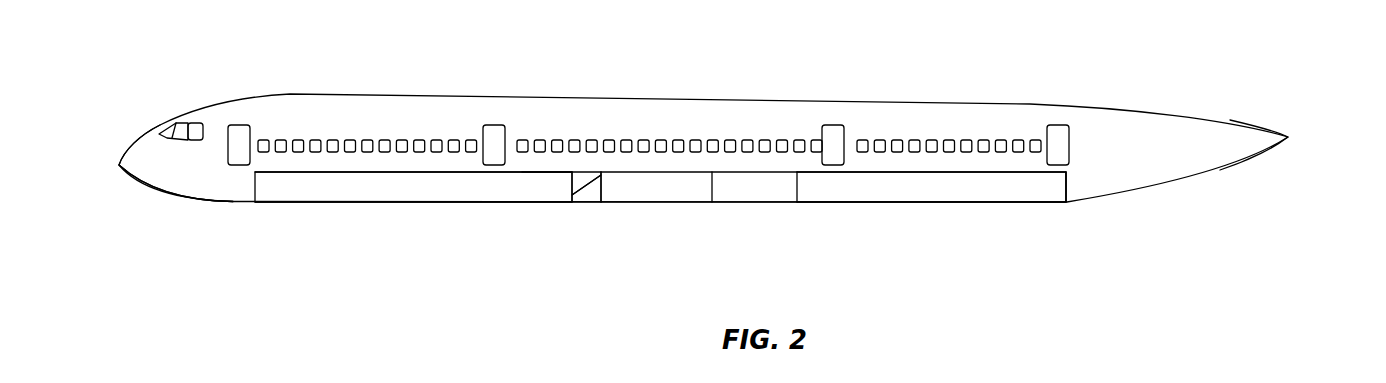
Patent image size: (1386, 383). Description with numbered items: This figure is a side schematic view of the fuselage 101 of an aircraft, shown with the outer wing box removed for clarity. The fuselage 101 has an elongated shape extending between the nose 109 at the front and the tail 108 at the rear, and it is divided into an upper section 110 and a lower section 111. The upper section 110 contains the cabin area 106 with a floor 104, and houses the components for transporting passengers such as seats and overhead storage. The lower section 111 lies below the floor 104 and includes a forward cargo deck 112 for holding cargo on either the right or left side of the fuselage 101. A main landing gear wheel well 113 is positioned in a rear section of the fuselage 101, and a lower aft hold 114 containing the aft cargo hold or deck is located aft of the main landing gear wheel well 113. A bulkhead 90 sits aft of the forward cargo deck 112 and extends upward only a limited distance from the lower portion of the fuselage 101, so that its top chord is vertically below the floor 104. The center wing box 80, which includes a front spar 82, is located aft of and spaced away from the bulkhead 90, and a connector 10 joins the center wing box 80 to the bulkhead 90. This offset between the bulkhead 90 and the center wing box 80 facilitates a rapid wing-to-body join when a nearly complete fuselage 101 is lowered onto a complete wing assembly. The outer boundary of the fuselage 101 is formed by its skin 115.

The fuselage 101 is at (300, 93).
The cabin area 106 is at (370, 117).
The upper section 110 is at (865, 113).
The floor 104 is at (522, 172).
The connector 10 is at (585, 192).
The front spar 82 is at (603, 187).
The center wing box 80 is at (650, 203).
The bulkhead 90 is at (572, 192).
The forward cargo deck 112 is at (372, 202).
The main landing gear wheel well 113 is at (742, 203).
The lower aft hold 114 is at (888, 203).
The skin 115 is at (1047, 203).
The lower section 111 is at (237, 190).
The nose 109 is at (118, 165).
The tail 108 is at (1288, 137).